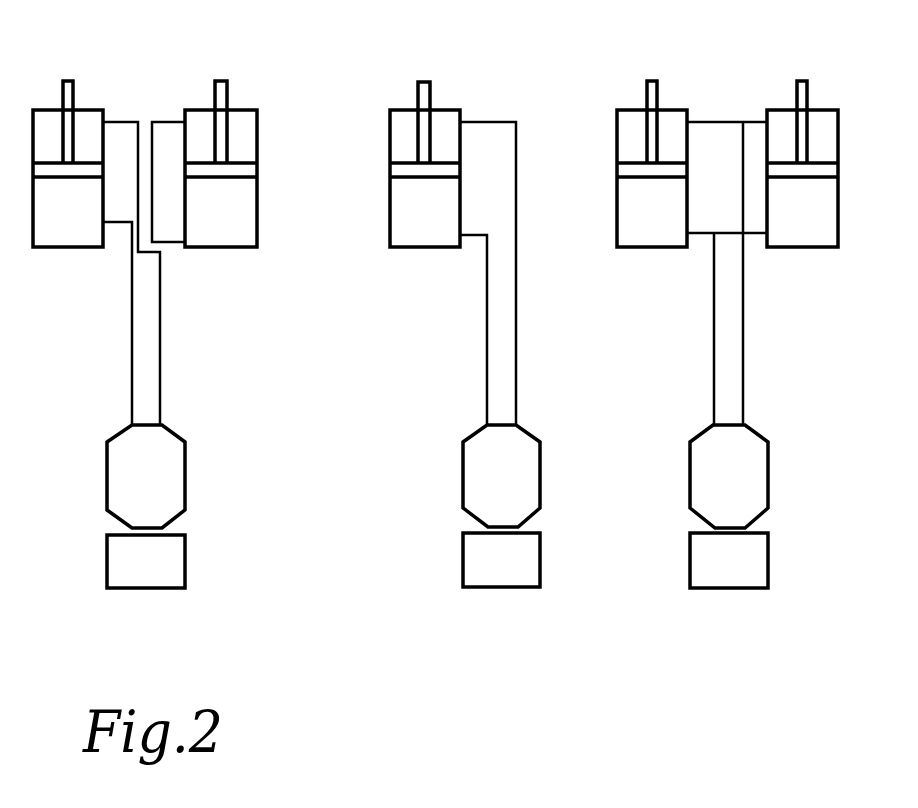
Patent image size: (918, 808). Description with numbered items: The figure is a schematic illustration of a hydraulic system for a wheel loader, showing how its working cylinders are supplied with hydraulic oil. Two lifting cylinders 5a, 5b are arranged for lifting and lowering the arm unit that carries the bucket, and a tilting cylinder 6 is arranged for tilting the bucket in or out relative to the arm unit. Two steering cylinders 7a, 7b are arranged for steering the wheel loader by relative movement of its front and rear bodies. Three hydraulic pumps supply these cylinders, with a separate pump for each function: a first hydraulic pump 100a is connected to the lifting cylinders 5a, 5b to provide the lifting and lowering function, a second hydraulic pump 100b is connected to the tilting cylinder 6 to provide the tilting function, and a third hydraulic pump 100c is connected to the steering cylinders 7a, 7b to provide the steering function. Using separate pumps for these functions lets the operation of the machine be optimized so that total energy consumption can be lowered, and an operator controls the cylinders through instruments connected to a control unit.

The steering cylinder 7a is at (88, 122).
The steering cylinder 7b is at (240, 120).
The tilting cylinder 6 is at (443, 120).
The lifting cylinder 5a is at (670, 123).
The lifting cylinder 5b is at (820, 120).
The third hydraulic pump 100c is at (170, 472).
The second hydraulic pump 100b is at (518, 462).
The first hydraulic pump 100a is at (742, 457).